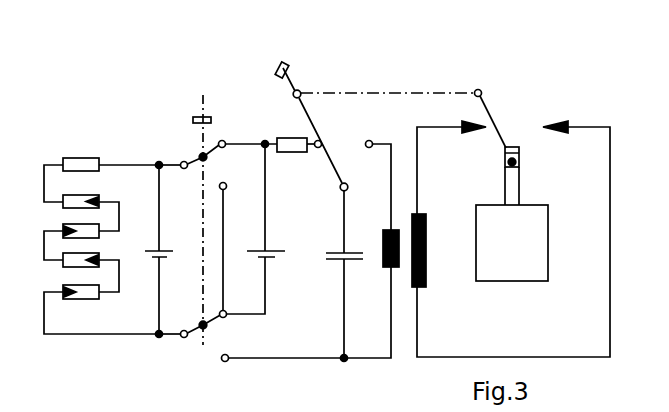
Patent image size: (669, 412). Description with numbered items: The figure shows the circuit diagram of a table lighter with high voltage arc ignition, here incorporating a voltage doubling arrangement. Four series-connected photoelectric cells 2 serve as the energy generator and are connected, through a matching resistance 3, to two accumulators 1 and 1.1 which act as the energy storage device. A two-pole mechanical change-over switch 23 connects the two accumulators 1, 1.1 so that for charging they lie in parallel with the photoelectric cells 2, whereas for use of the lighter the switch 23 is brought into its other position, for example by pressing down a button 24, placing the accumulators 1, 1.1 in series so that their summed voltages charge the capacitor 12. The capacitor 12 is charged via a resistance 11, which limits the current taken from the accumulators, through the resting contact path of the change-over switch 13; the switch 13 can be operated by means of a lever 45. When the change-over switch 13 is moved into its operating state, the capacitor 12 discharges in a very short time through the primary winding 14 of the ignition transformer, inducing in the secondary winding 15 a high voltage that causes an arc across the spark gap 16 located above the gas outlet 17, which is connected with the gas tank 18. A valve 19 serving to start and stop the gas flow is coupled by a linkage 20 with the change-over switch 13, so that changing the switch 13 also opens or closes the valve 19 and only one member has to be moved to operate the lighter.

The accumulator 1 is at (162, 248).
The accumulator 1.1 is at (272, 248).
The photoelectric cells 2 is at (87, 293).
The matching resistance 3 is at (79, 165).
The resistance 11 is at (281, 138).
The capacitor 12 is at (333, 262).
The change-over switch 13 is at (332, 167).
The primary winding 14 is at (383, 267).
The secondary winding 15 is at (426, 248).
The spark gap 16 is at (523, 128).
The gas outlet 17 is at (512, 145).
The gas tank 18 is at (533, 242).
The valve 19 is at (517, 162).
The linkage 20 is at (388, 93).
The two-pole mechanical change-over switch 23 is at (192, 160).
The button 24 is at (203, 204).
The lever 45 is at (284, 62).